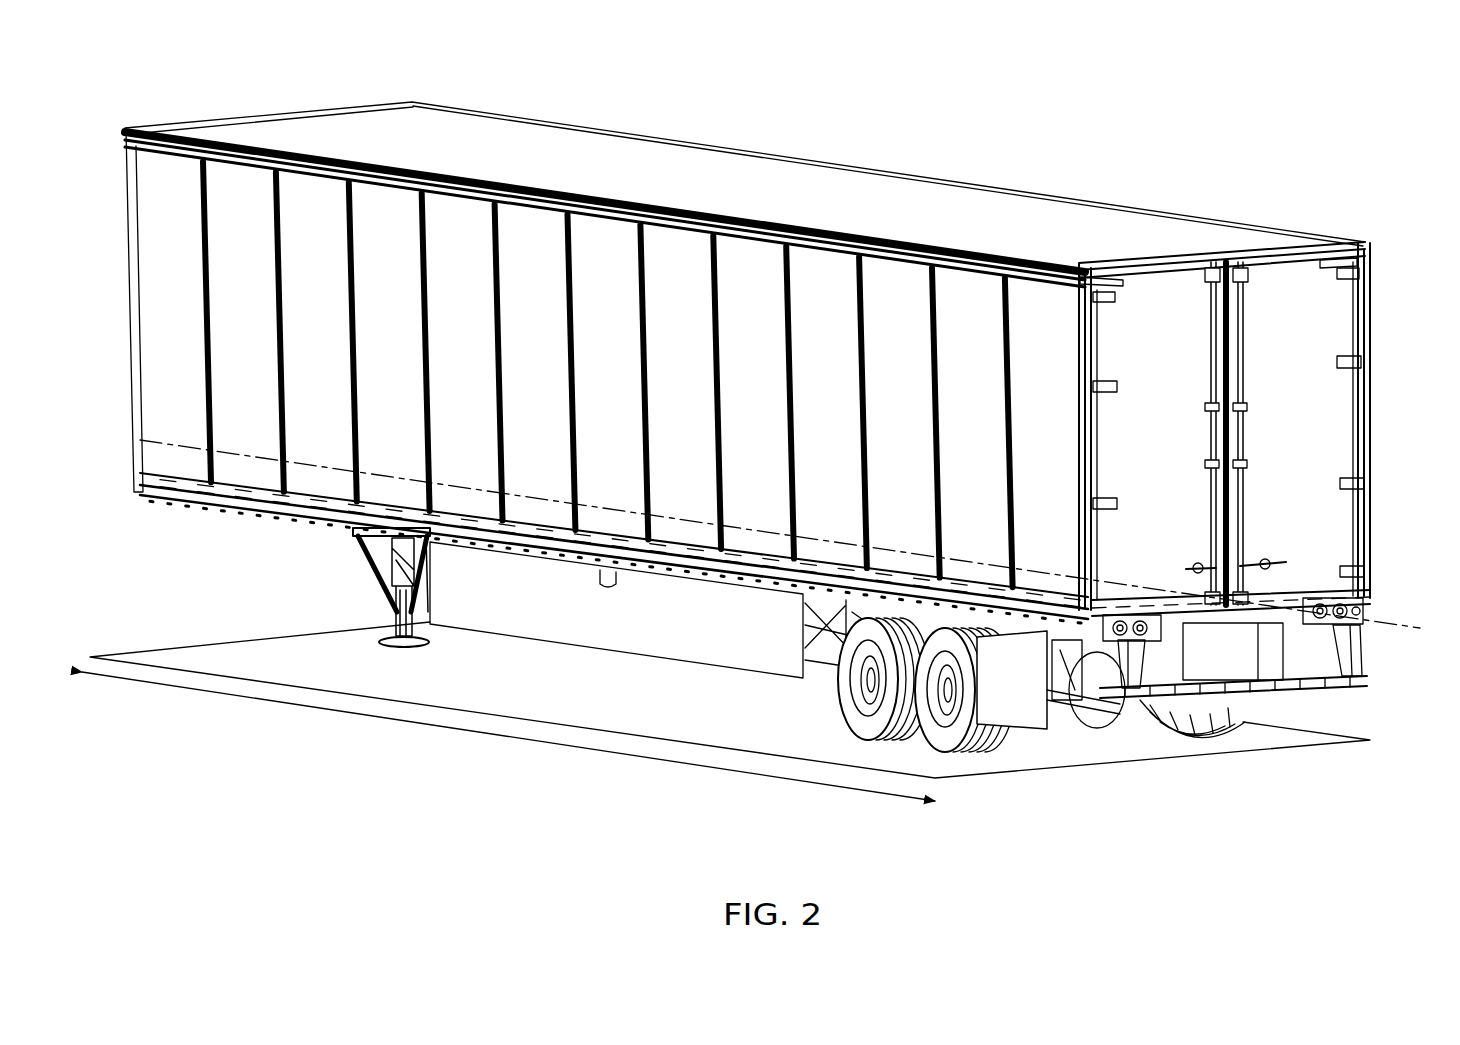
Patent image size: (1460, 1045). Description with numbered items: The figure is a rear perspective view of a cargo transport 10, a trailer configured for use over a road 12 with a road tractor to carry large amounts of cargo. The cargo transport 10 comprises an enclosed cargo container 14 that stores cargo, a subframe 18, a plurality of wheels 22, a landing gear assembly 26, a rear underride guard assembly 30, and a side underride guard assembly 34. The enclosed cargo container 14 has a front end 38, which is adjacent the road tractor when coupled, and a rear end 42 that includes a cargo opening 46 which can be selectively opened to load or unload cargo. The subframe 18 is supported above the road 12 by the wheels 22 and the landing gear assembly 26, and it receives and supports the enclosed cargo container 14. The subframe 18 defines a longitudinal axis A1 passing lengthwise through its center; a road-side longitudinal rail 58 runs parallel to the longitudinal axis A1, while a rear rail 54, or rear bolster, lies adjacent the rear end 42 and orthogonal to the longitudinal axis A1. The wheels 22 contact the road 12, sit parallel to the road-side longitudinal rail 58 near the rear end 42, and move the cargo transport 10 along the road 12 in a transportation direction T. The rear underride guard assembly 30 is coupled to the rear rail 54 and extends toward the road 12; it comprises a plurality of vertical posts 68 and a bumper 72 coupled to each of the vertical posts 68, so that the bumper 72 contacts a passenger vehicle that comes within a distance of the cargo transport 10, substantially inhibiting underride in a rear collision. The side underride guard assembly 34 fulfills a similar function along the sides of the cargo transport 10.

The cargo transport 10 is at (799, 118).
The enclosed cargo container 14 is at (913, 162).
The front end 38 is at (233, 104).
The subframe 18 is at (274, 541).
The road-side longitudinal rail 58 is at (178, 498).
The side underride guard assembly 34 is at (548, 662).
The landing gear assembly 26 is at (352, 597).
The wheels 22 is at (893, 758).
The rear underride guard assembly 30 is at (1270, 712).
The rear end 42 is at (1366, 210).
The cargo opening 46 is at (1334, 510).
The rear rail 54 is at (1345, 592).
The bumper 72 is at (1360, 690).
The vertical posts 68 is at (1342, 652).
The road 12 is at (151, 640).
The transportation direction T is at (395, 722).
The longitudinal axis A1 is at (140, 440).